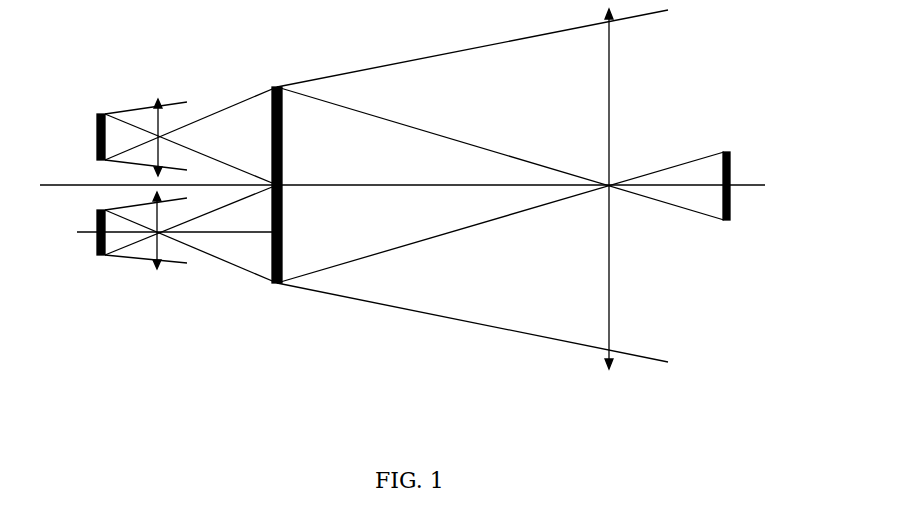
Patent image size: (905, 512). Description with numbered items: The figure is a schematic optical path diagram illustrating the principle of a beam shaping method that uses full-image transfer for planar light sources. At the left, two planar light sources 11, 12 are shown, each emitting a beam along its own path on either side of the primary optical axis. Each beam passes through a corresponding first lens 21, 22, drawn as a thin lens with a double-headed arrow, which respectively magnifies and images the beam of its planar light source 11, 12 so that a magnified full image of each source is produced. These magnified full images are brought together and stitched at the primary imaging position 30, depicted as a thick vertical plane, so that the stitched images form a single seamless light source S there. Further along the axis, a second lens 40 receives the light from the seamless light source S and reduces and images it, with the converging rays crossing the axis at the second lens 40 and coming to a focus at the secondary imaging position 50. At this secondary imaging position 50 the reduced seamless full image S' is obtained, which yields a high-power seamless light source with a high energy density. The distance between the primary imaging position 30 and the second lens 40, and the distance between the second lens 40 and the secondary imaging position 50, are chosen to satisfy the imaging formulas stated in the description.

The planar light source 11 is at (96, 135).
The planar light source 12 is at (96, 233).
The first lens 21 is at (188, 128).
The first lens 22 is at (192, 252).
The primary imaging position 30 is at (306, 162).
The second lens 40 is at (648, 189).
The secondary imaging position 50 is at (752, 180).
The seamless light source S is at (318, 234).
The reduced seamless full image S' is at (772, 228).